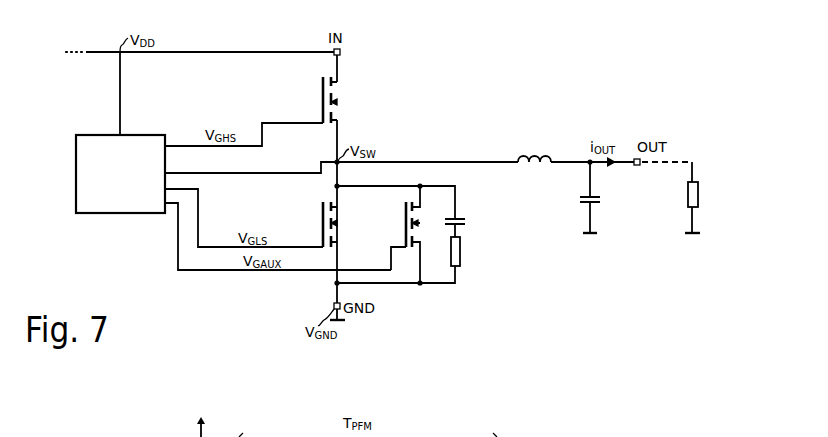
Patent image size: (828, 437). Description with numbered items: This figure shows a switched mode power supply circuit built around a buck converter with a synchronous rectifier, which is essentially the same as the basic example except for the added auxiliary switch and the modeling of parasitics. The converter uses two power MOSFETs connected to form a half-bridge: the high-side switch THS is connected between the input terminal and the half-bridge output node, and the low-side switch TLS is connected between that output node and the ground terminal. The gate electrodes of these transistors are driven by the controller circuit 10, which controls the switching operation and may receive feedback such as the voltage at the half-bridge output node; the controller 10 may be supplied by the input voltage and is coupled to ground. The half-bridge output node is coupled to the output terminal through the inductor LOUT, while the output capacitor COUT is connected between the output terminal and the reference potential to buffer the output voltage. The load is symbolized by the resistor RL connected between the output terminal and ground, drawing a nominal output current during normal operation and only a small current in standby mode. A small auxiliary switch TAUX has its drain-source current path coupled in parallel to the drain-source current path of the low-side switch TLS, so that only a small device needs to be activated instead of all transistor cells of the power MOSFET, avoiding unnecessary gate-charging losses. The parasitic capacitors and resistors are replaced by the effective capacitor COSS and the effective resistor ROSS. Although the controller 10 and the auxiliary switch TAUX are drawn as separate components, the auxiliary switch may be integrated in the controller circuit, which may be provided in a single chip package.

The controller circuit 10 is at (119, 183).
The high-side switch THS is at (315, 119).
The low-side switch TLS is at (316, 224).
The auxiliary switch TAUX is at (392, 234).
The effective capacitor COSS is at (474, 227).
The effective resistor ROSS is at (477, 253).
The inductor LOUT is at (537, 146).
The output capacitor COUT is at (573, 197).
The load resistor RL is at (701, 197).